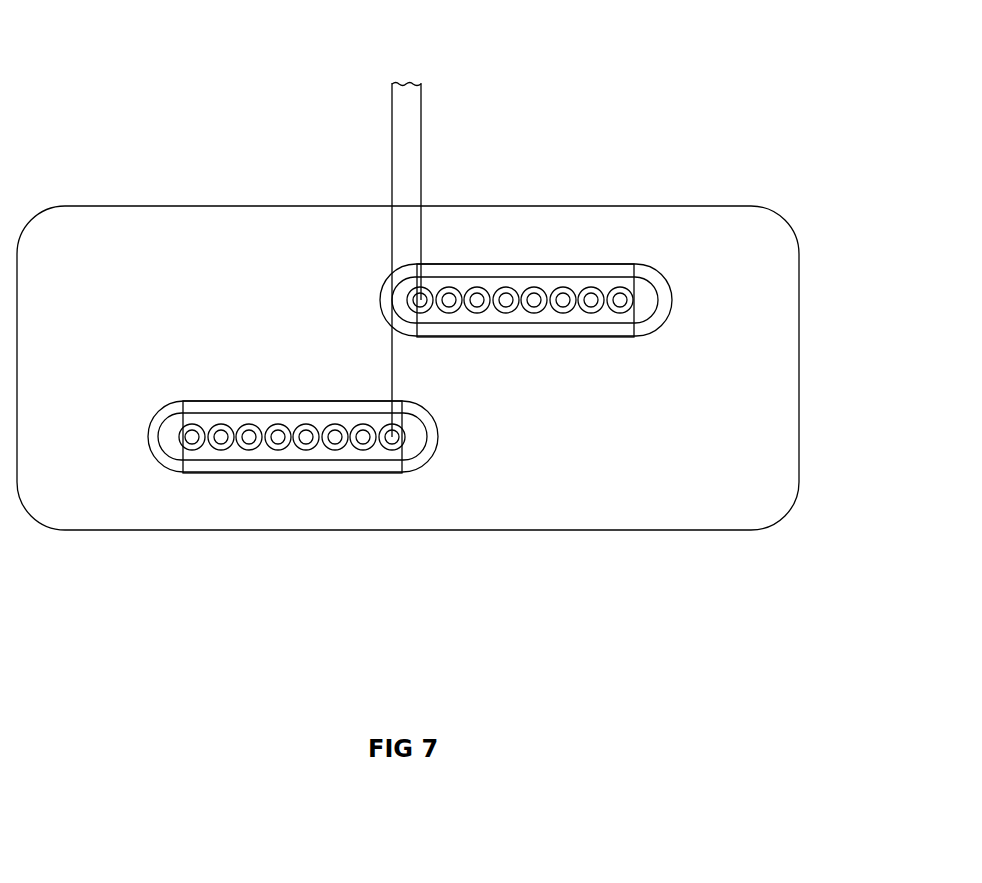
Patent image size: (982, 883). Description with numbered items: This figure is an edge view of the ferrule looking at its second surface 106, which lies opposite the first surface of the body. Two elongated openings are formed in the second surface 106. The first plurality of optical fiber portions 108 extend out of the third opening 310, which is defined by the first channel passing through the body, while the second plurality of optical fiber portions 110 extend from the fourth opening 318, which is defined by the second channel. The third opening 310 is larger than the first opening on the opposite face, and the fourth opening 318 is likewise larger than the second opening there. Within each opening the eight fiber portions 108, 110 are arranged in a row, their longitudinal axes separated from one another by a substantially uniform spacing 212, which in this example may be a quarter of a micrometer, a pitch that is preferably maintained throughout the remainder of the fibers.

The second surface 106 is at (460, 356).
The first fiber portions 108 is at (292, 506).
The second fiber portions 110 is at (525, 209).
The spacing 212 is at (447, 230).
The third opening 310 is at (293, 507).
The fourth opening 318 is at (566, 239).